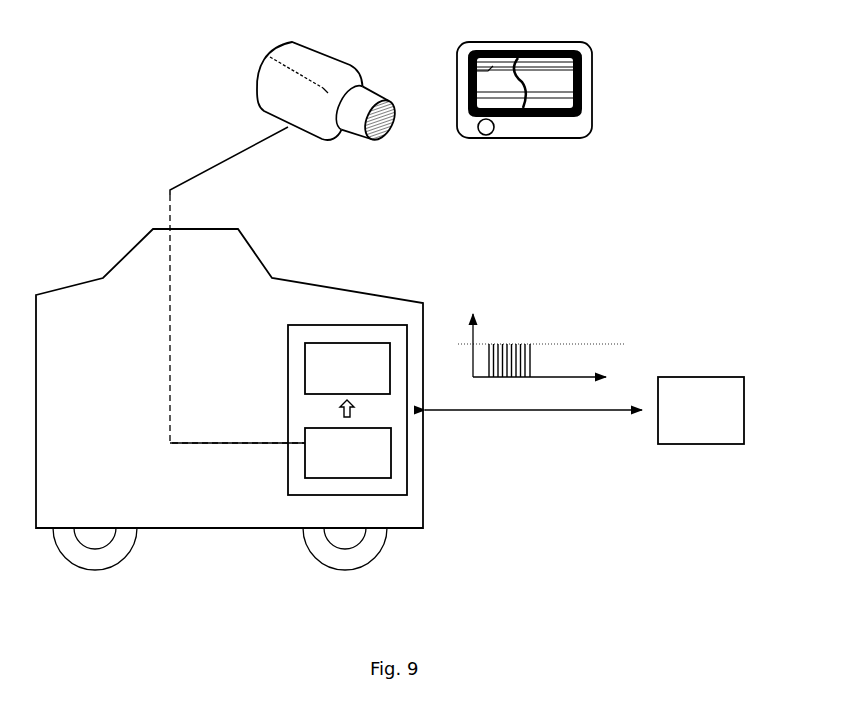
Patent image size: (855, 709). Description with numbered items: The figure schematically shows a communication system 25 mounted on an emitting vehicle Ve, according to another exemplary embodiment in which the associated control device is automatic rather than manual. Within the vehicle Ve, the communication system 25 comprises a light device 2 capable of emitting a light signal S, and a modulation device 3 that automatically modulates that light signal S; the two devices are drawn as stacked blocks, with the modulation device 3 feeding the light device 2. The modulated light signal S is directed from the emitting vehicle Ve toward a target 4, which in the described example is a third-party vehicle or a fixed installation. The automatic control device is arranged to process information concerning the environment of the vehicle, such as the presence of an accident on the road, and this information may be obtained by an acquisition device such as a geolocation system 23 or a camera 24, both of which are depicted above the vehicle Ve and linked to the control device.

The light device 2 is at (340, 360).
The modulation device 3 is at (322, 472).
The target 4 is at (745, 365).
The geolocation system 23 is at (594, 123).
The camera 24 is at (268, 102).
The communication system 25 is at (494, 511).
The light signal S is at (513, 308).
The emitting vehicle Ve is at (197, 534).